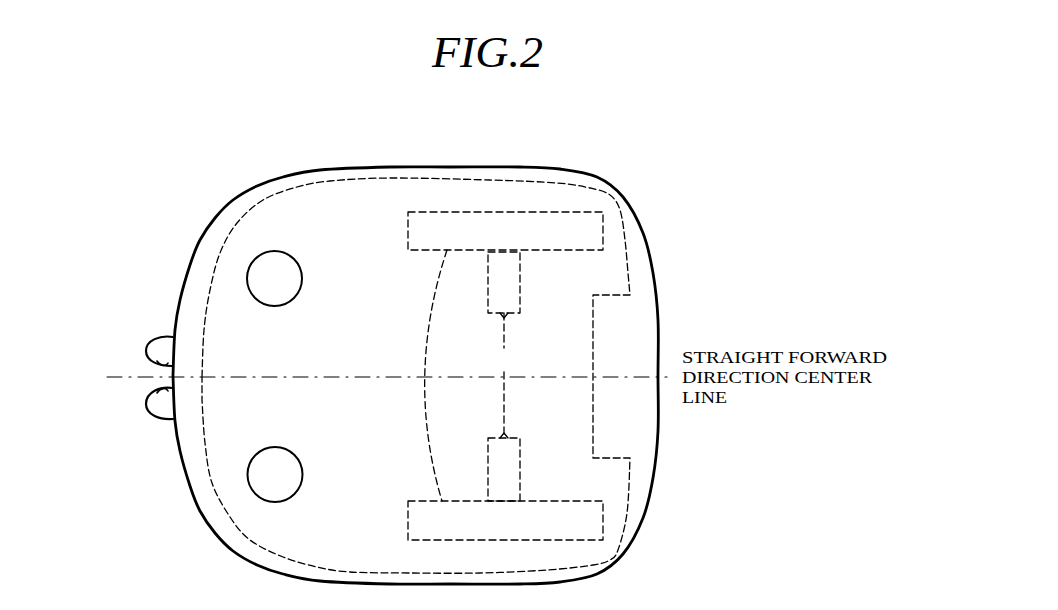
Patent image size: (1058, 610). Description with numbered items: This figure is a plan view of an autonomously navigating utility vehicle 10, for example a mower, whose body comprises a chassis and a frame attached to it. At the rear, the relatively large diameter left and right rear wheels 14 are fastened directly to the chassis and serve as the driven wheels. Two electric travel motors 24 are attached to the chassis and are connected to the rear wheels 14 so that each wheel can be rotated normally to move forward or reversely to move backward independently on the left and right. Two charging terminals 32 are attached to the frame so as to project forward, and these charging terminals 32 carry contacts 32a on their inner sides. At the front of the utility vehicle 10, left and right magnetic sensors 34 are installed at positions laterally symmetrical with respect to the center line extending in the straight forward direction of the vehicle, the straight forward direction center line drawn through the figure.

The autonomously navigating utility vehicle 10 is at (606, 165).
The rear wheels 14 is at (428, 375).
The travel motors 24 is at (504, 376).
The charging terminals 32 is at (155, 361).
The contacts 32a is at (157, 390).
The magnetic sensors 34 is at (275, 447).